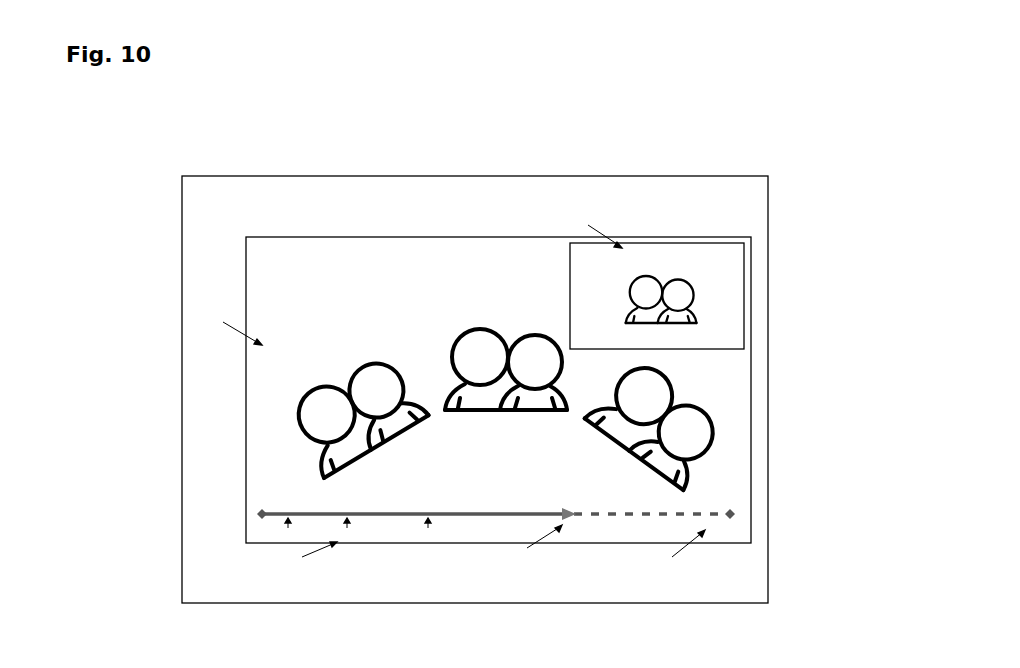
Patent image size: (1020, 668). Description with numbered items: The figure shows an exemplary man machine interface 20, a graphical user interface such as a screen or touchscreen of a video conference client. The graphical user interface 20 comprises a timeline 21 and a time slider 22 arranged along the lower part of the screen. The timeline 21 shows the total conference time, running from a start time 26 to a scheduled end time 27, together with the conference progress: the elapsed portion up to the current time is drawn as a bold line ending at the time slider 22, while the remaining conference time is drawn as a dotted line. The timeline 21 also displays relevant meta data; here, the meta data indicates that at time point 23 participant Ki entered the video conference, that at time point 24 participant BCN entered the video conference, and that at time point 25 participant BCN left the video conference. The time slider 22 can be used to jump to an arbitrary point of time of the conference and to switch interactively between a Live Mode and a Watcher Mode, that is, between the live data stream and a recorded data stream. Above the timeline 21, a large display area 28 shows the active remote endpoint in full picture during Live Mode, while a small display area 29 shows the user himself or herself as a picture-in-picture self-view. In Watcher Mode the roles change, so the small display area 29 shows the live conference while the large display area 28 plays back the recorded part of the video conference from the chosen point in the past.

The man machine interface 20 is at (410, 158).
The timeline 21 is at (455, 536).
The time slider 22 is at (567, 512).
The time point 23 is at (292, 512).
The time point 24 is at (348, 512).
The time point 25 is at (427, 512).
The start time 26 is at (260, 512).
The scheduled end time 27 is at (730, 512).
The large display area 28 is at (403, 270).
The small display area 29 is at (728, 267).